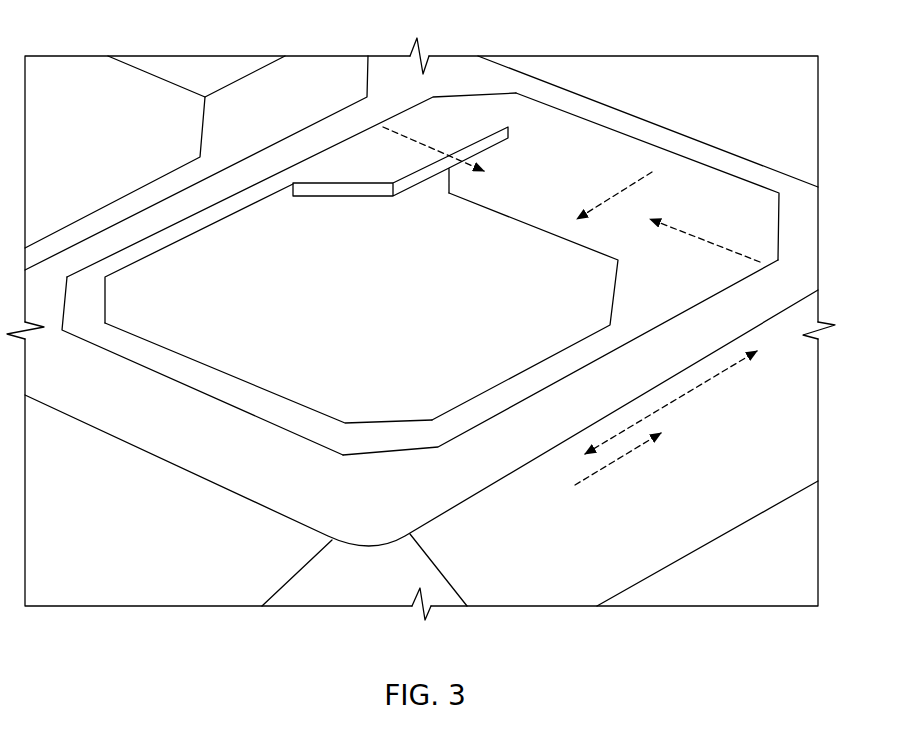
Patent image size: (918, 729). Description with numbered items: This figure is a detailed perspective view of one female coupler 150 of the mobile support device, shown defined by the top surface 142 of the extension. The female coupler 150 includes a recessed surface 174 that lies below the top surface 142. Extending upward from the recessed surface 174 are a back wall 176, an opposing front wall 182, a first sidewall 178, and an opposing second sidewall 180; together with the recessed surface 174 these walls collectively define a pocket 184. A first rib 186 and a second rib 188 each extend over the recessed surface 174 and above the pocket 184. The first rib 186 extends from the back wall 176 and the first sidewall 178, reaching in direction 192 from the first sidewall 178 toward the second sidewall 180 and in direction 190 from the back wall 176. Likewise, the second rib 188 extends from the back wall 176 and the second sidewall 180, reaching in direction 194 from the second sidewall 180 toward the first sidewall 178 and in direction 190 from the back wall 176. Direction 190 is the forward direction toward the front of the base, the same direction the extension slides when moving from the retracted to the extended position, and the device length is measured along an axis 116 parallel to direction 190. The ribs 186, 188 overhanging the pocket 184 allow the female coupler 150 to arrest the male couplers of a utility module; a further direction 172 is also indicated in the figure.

The axis 116 is at (714, 388).
The top surface 142 is at (758, 98).
The female coupler 150 is at (170, 64).
The second direction 172 is at (626, 467).
The recessed surface 174 is at (515, 243).
The back wall 176 is at (586, 174).
The first sidewall 178 is at (246, 230).
The second sidewall 180 is at (499, 395).
The front wall 182 is at (249, 380).
The pocket 184 is at (390, 339).
The first rib 186 is at (370, 146).
The second rib 188 is at (682, 264).
The direction 190 is at (638, 195).
The direction 192 is at (430, 138).
The direction 194 is at (722, 240).